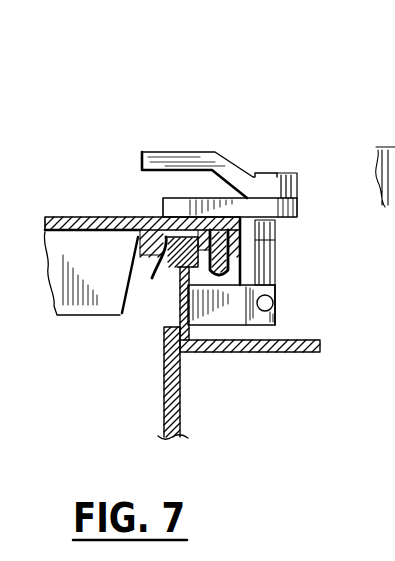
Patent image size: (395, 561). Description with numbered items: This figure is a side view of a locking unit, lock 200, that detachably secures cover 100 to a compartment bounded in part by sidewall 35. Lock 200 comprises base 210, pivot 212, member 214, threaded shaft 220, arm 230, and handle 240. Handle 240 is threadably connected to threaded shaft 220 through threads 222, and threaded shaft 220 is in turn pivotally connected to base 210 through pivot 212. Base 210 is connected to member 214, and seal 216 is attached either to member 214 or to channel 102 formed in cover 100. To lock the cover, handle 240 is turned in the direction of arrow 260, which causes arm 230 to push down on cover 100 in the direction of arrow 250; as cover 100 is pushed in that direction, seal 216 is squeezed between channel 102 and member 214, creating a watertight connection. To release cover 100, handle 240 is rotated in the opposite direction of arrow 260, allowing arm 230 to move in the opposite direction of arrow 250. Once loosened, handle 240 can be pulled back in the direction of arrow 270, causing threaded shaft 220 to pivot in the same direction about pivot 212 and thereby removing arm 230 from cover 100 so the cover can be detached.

The cover 100 is at (58, 222).
The channel 102 is at (137, 238).
The lock 200 is at (166, 90).
The base 210 is at (277, 318).
The pivot 212 is at (272, 302).
The member 214 is at (177, 300).
The seal 216 is at (152, 278).
The threaded shaft 220 is at (265, 270).
The threads 222 is at (273, 243).
The arm 230 is at (297, 214).
The handle 240 is at (152, 153).
The arrow 250 is at (325, 163).
The arrow 260 is at (290, 143).
The arrow 270 is at (316, 99).
The sidewall 35 is at (163, 362).